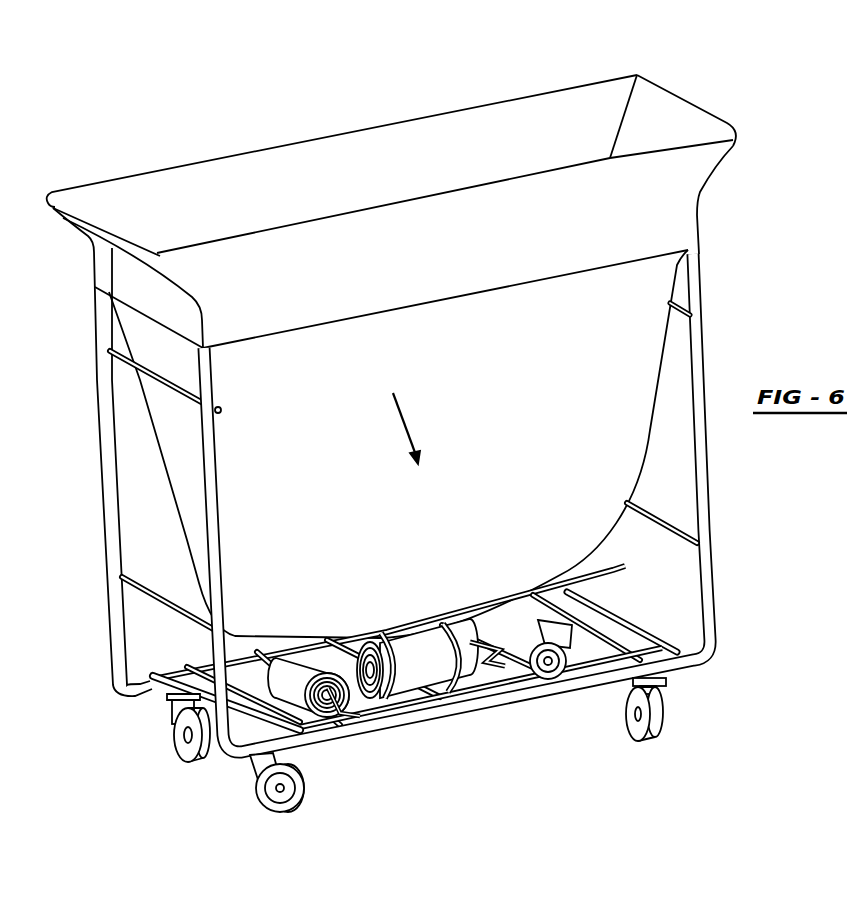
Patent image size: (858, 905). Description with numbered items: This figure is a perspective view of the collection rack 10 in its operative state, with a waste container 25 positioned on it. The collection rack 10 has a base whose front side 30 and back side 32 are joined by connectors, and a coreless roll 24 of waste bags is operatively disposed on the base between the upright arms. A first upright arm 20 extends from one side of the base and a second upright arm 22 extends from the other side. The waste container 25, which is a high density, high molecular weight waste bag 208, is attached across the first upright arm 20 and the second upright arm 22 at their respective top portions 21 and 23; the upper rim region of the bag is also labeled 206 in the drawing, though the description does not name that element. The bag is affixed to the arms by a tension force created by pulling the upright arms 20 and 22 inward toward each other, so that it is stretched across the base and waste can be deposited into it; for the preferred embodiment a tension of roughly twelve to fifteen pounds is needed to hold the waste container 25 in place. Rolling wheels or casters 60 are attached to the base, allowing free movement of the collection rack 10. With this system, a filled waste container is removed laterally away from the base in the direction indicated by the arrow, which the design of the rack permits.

The collection rack 10 is at (424, 443).
The first upright arm 20 is at (705, 477).
The top portion 21 is at (713, 113).
The second upright arm 22 is at (220, 533).
The top portion 23 is at (113, 233).
The coreless roll 24 is at (430, 658).
The waste container 25 is at (680, 173).
The front side 30 is at (544, 690).
The back side 32 is at (513, 614).
The casters 60 is at (640, 735).
The tub rim 206 is at (432, 112).
The waste bag 208 is at (178, 208).